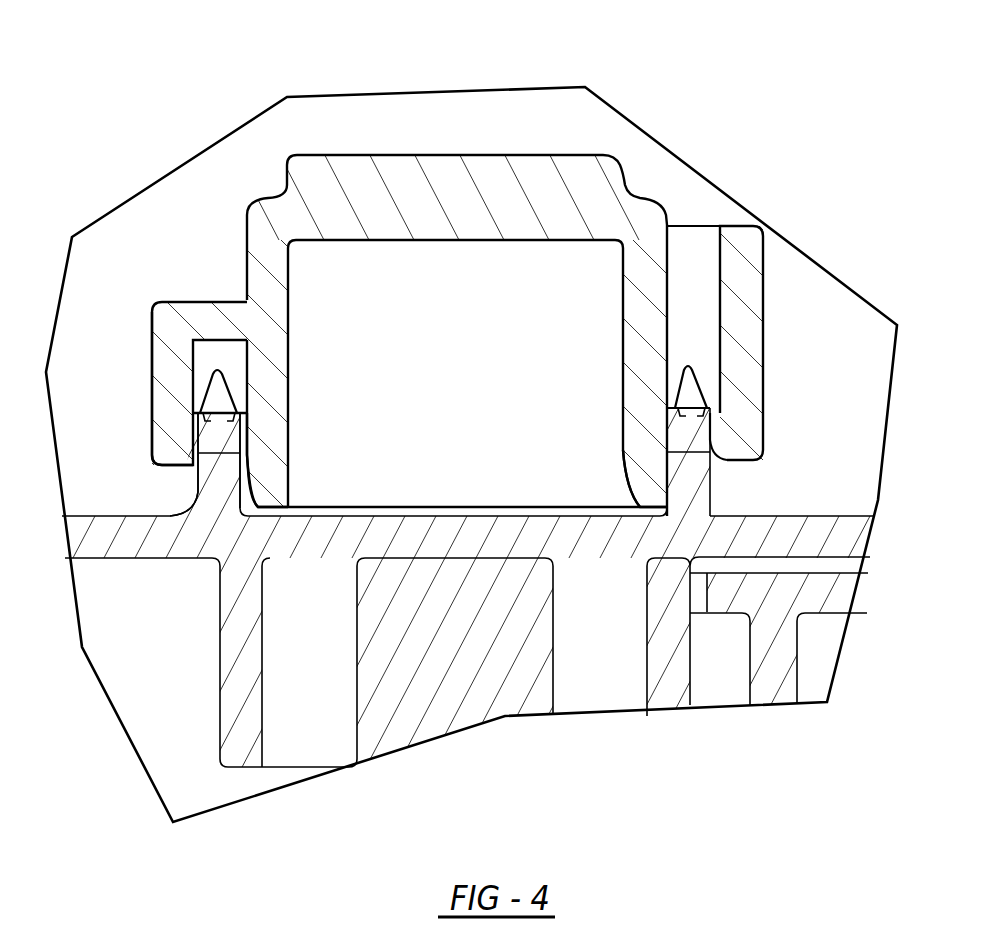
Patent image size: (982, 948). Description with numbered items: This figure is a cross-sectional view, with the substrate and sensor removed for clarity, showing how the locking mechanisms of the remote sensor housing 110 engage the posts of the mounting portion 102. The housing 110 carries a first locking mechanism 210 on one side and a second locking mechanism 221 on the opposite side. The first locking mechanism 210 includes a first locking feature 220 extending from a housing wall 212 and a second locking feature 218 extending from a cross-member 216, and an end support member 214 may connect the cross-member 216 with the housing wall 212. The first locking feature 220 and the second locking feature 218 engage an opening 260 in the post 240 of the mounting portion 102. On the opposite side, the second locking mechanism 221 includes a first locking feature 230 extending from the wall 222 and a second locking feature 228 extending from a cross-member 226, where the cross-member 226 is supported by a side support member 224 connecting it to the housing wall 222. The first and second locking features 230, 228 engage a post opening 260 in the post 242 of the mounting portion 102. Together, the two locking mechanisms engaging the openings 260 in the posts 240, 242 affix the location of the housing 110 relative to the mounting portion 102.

The mounting portion 102 is at (795, 533).
The housing 110 is at (352, 300).
The first locking mechanism 210 is at (163, 362).
The housing wall 212 is at (267, 392).
The end support member 214 is at (215, 327).
The cross-member 216 is at (177, 410).
The second locking feature 218 is at (202, 422).
The first locking feature 220 is at (237, 422).
The second locking mechanism 221 is at (757, 365).
The wall 222 is at (647, 408).
The side support member 224 is at (697, 260).
The cross-member 226 is at (743, 420).
The second locking feature 228 is at (710, 413).
The first locking feature 230 is at (673, 422).
The post 240 is at (220, 400).
The post 242 is at (688, 392).
The opening 260 is at (223, 420).